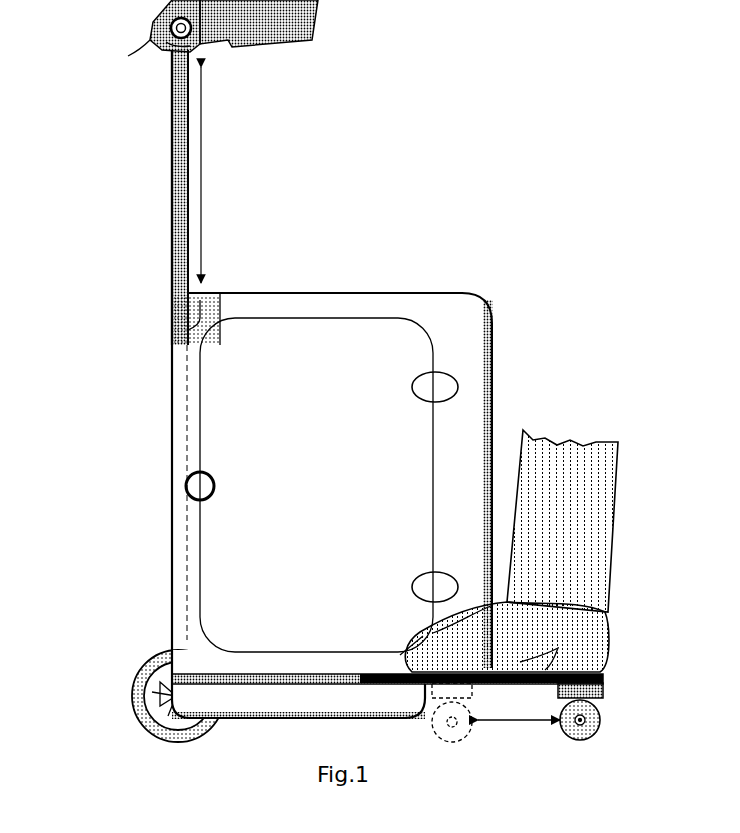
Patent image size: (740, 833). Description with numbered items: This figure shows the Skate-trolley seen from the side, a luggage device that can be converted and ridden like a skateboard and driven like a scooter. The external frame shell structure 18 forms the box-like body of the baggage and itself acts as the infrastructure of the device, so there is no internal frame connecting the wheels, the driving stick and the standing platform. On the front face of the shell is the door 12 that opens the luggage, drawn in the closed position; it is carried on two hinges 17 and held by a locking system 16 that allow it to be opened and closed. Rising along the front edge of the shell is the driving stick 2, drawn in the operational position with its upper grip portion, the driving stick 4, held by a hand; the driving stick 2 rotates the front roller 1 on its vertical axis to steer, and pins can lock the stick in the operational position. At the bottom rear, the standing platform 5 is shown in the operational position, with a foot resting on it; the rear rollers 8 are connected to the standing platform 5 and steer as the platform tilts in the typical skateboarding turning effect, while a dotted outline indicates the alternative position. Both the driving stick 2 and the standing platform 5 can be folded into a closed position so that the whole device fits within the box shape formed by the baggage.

The front roller 1 is at (143, 692).
The driving stick 2 is at (174, 163).
The driving stick 4 is at (165, 37).
The standing platform 5 is at (603, 683).
The rear roller 8 is at (575, 742).
The door 12 is at (220, 372).
The locking system 16 is at (198, 486).
The hinges 17 is at (436, 572).
The external frame shell structure 18 is at (476, 292).